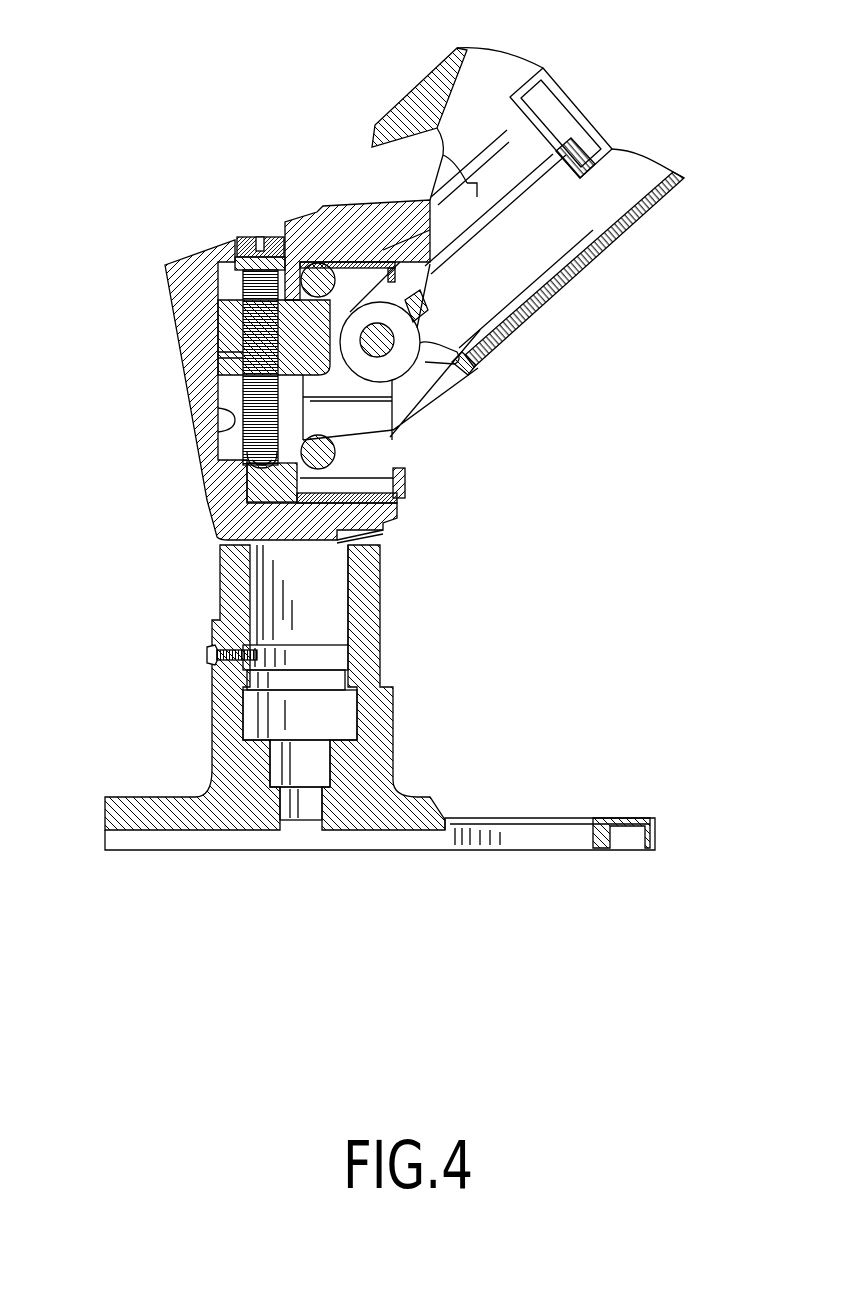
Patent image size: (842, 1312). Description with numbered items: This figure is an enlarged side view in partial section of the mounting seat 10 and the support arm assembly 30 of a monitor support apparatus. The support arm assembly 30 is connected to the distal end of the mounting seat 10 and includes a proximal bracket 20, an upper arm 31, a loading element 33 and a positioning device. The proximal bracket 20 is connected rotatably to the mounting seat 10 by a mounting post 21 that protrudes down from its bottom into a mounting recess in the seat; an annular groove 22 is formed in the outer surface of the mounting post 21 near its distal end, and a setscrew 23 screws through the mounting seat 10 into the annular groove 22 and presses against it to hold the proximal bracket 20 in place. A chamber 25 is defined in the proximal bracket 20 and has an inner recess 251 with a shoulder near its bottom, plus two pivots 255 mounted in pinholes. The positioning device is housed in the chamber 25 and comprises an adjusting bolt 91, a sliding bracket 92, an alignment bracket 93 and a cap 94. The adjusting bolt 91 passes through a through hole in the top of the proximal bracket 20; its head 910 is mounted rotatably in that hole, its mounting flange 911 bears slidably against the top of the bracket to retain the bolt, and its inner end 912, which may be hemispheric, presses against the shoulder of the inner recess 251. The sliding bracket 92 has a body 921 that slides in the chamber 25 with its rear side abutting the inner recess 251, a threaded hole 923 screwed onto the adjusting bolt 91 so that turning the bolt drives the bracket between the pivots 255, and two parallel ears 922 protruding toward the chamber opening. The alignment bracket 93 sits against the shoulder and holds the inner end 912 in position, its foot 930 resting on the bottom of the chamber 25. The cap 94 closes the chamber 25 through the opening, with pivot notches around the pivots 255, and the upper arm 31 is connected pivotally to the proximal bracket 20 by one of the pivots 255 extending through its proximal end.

The mounting seat 10 is at (403, 720).
The mounting post 21 is at (318, 598).
The annular groove 22 is at (345, 657).
The setscrew 23 is at (207, 655).
The proximal bracket 20 is at (158, 297).
The adjusting bolt 91 is at (238, 284).
The mounting flange 911 is at (235, 248).
The head 910 is at (254, 243).
The inner end 912 is at (253, 467).
The body 921 is at (240, 328).
The threaded hole 923 is at (233, 355).
The inner recess 251 is at (227, 422).
The foot 930 is at (250, 490).
The alignment bracket 93 is at (304, 480).
The chamber 25 is at (403, 478).
The cap 94 is at (410, 502).
The pivots 255 is at (312, 265).
The sliding bracket 92 is at (318, 315).
The parallel ears 922 is at (445, 385).
The support arm assembly 30 is at (393, 85).
The loading element 33 is at (592, 127).
The upper arm 31 is at (438, 153).